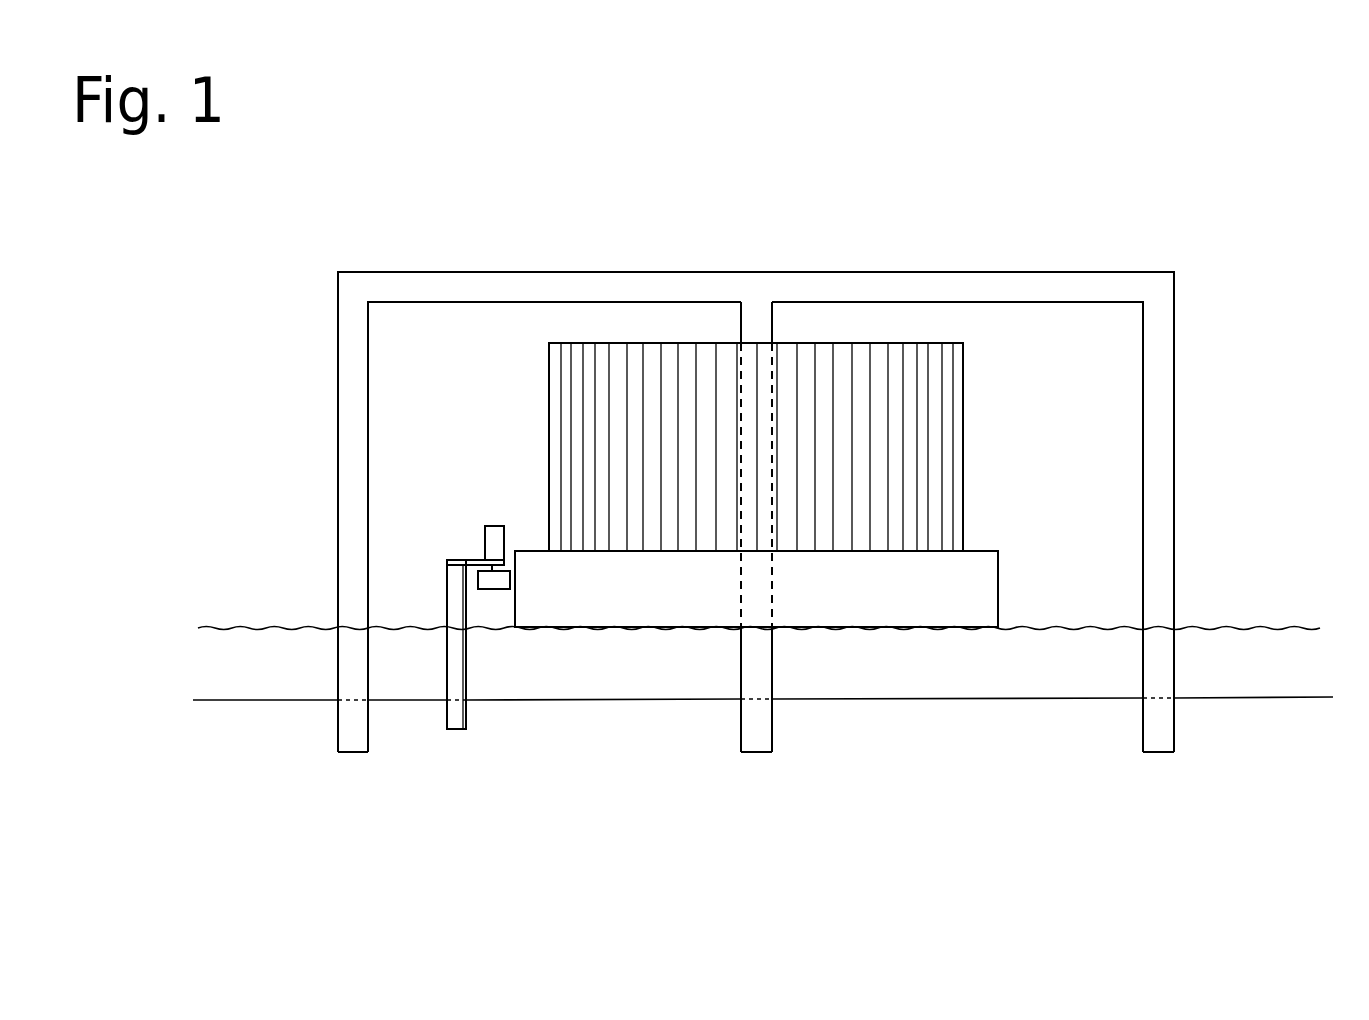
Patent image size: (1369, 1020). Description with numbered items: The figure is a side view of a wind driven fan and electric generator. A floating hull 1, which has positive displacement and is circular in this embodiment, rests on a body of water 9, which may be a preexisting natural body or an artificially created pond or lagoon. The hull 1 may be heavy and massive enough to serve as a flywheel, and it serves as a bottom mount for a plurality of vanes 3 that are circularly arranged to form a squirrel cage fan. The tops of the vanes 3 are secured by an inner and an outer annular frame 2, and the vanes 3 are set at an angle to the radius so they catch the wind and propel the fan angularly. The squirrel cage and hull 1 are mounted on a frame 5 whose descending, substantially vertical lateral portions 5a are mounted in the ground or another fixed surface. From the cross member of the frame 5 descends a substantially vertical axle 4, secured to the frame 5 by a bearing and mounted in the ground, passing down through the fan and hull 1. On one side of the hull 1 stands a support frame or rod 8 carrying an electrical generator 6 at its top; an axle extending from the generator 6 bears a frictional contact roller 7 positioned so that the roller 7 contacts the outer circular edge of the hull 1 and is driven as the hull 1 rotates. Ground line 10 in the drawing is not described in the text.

The floating hull 1 is at (998, 573).
The annular frame 2 is at (793, 430).
The vanes 3 is at (914, 443).
The axle 4 is at (772, 320).
The frame 5 is at (545, 272).
The lateral portions 5a is at (1174, 403).
The electrical generator 6 is at (490, 526).
The frictional contact roller 7 is at (495, 589).
The support frame or rod 8 is at (447, 643).
The body of water 9 is at (297, 628).
The tank bottom 10 is at (250, 700).